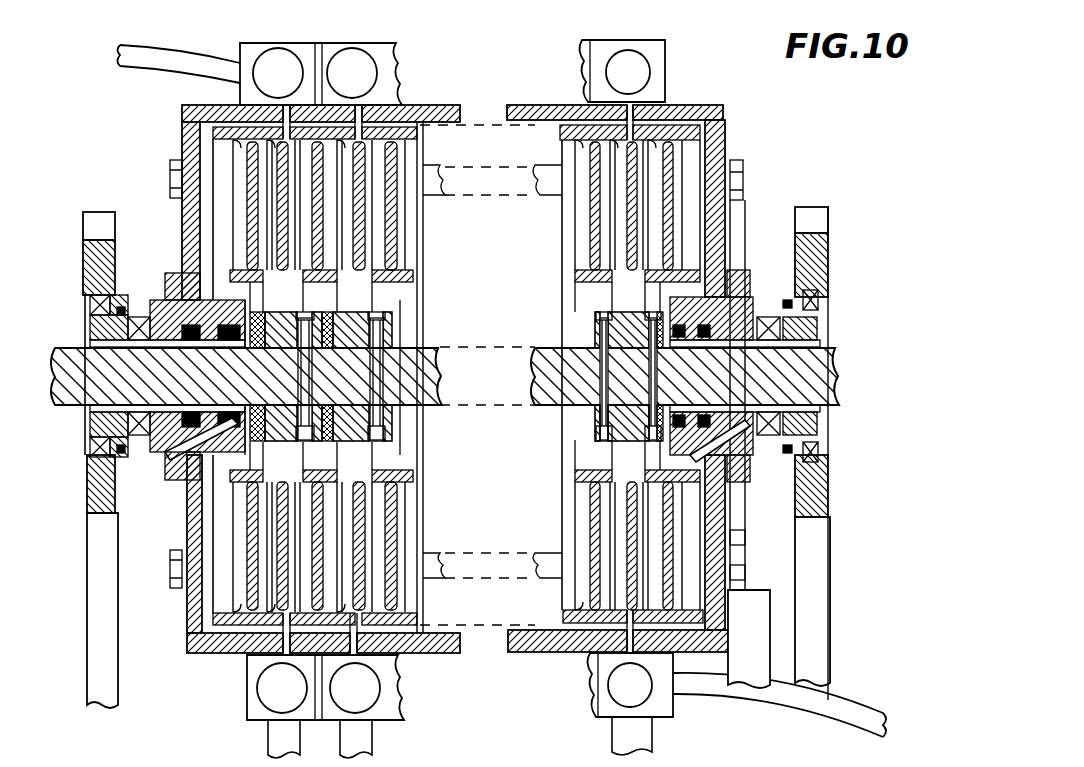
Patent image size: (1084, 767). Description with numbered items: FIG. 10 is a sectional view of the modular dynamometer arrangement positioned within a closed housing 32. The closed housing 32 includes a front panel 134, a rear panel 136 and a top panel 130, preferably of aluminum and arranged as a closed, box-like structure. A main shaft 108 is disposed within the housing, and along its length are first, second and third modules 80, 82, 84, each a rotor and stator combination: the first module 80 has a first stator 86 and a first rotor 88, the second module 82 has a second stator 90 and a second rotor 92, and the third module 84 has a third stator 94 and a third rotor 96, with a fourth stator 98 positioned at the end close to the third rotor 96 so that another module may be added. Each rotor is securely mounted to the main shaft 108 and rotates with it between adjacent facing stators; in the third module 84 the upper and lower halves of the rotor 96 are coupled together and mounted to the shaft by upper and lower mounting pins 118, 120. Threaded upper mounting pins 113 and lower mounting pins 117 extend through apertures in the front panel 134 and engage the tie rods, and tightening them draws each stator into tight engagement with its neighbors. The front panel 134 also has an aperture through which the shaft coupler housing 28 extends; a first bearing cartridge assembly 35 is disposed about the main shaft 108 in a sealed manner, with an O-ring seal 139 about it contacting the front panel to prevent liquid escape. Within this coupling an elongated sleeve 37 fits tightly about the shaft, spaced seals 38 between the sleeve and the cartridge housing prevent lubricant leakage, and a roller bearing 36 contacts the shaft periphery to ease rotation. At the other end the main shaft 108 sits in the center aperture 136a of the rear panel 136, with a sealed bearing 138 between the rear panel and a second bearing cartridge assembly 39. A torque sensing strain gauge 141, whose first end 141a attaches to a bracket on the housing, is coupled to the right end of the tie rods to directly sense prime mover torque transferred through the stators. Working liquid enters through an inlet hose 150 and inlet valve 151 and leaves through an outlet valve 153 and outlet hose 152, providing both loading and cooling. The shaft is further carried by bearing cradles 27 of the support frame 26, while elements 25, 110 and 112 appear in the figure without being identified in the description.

The end flange 25 is at (84, 271).
The support frame 26 is at (78, 578).
The bearing cradle 27 is at (92, 446).
The shaft coupler housing 28 is at (78, 328).
The closed housing 32 is at (560, 660).
The first bearing cartridge assembly 35 is at (127, 465).
The roller bearing 36 is at (88, 428).
The elongated sleeve 37 is at (163, 333).
The spaced seals 38 is at (226, 333).
The second bearing cartridge assembly 39 is at (760, 288).
The first module 80 is at (246, 33).
The second module 82 is at (352, 34).
The third module 84 is at (560, 235).
The first stator 86 is at (236, 134).
The first rotor 88 is at (290, 175).
The second stator 90 is at (319, 128).
The second rotor 92 is at (358, 160).
The third stator 94 is at (600, 165).
The third rotor 96 is at (668, 140).
The fourth stator 98 is at (690, 165).
The main shaft 108 is at (46, 375).
The spline 110 is at (440, 556).
The spline 112 is at (440, 180).
The upper mounting pins 113 is at (167, 180).
The lower mounting pins 117 is at (169, 568).
The upper mounting pin 118 is at (612, 330).
The lower mounting pin 120 is at (598, 412).
The top panel 130 is at (540, 106).
The front panel 134 is at (184, 634).
The rear panel 136 is at (765, 520).
The center aperture 136a is at (735, 335).
The sealed bearing 138 is at (718, 456).
The O-ring seal 139 is at (194, 488).
The torque sensing strain gauge 141 is at (778, 596).
The first end 141a is at (750, 310).
The inlet hose 150 is at (138, 44).
The inlet valve 151 is at (666, 64).
The outlet hose 152 is at (807, 723).
The outlet valve 153 is at (674, 716).